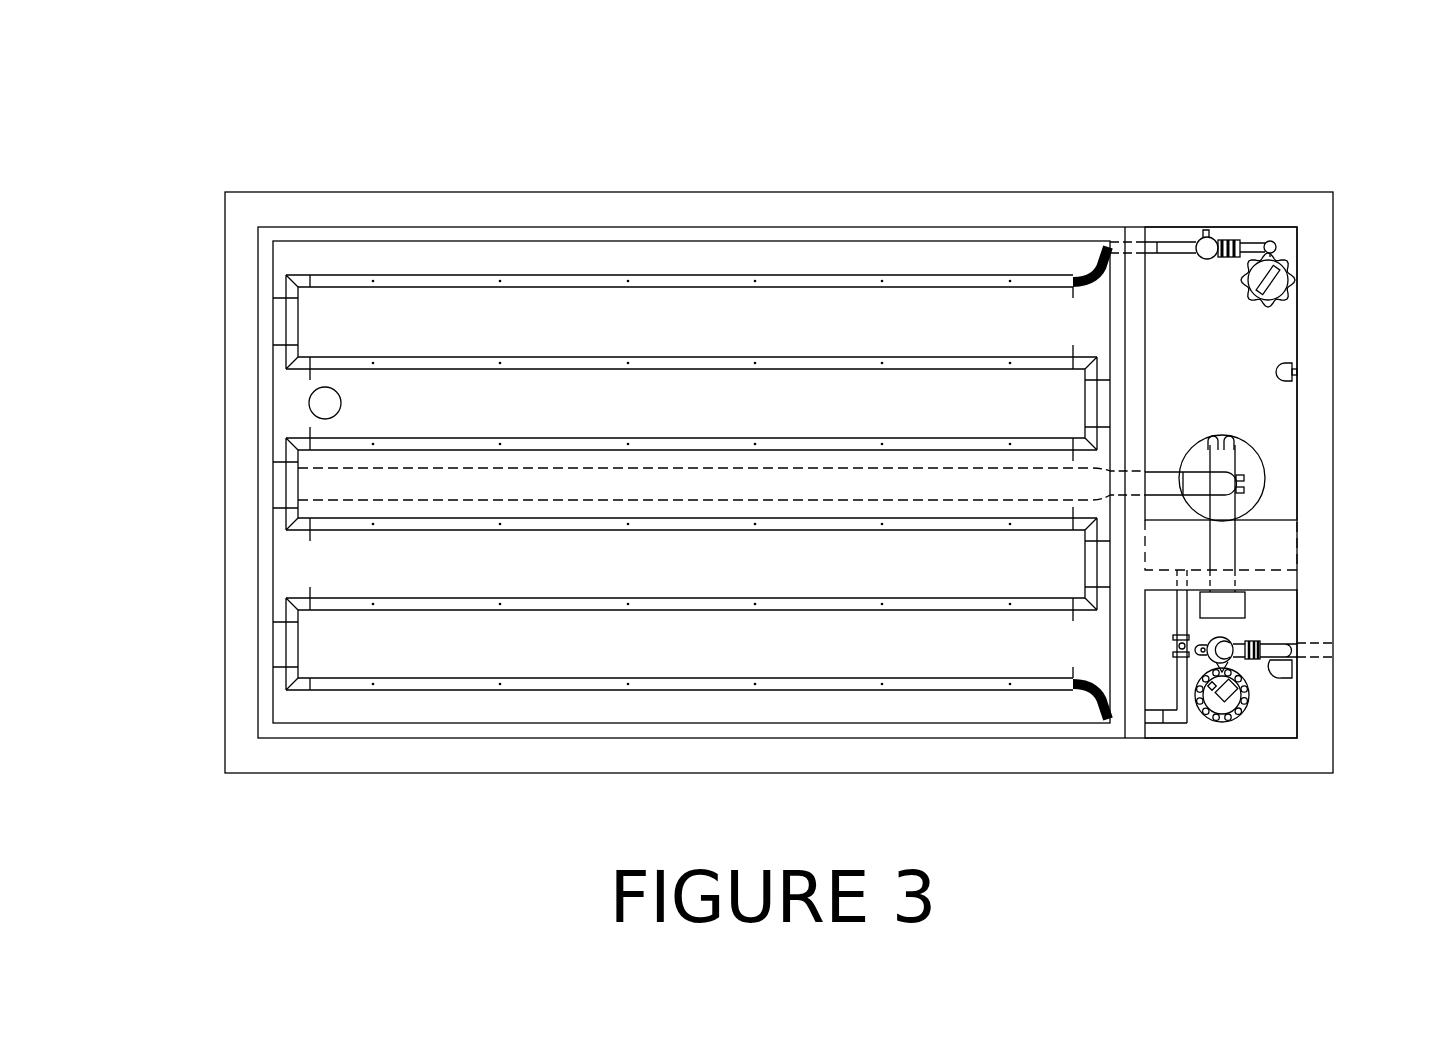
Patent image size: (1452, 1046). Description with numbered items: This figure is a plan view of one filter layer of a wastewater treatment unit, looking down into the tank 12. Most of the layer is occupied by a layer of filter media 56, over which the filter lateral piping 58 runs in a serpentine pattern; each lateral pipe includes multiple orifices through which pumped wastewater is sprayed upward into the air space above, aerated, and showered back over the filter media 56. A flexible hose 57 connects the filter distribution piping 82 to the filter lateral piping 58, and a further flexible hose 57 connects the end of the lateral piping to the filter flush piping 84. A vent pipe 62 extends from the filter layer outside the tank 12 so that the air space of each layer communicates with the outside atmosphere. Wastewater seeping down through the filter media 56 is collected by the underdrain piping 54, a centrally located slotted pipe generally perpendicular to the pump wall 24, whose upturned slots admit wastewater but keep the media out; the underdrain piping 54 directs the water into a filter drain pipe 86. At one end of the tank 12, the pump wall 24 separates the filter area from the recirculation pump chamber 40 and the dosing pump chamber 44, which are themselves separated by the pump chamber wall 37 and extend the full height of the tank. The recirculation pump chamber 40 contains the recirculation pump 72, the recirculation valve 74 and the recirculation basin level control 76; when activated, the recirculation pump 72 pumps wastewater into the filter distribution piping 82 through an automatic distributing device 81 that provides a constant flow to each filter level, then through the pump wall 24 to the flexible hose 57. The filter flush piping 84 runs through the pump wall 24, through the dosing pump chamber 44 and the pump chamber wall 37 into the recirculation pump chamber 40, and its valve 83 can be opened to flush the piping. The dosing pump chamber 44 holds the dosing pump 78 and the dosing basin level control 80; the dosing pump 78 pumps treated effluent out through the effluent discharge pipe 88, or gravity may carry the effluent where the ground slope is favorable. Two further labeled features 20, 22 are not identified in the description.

The tank 12 is at (510, 775).
The water treatment unit 20 is at (1247, 172).
The tank 22 is at (682, 182).
The pump wall 24 is at (1148, 440).
The pump chamber wall 37 is at (1250, 597).
The recirculation pump chamber 40 is at (1238, 352).
The dosing pump chamber 44 is at (1293, 730).
The underdrain piping 54 is at (350, 493).
The filter media 56 is at (710, 413).
The flexible hose 57 is at (1082, 250).
The filter lateral piping 58 is at (447, 277).
The vent pipe 62 is at (307, 403).
The recirculation pump 72 is at (1292, 303).
The recirculation valve 74 is at (1245, 470).
The recirculation basin level control 76 is at (1298, 380).
The dosing pump 78 is at (1228, 722).
The dosing basin level control 80 is at (1293, 680).
The automatic distributing device 81 is at (1203, 232).
The filter distribution piping 82 is at (1165, 236).
The valve 83 is at (1173, 655).
The filter flush piping 84 is at (1180, 730).
The filter drain pipe 86 is at (1157, 478).
The effluent discharge pipe 88 is at (1312, 652).